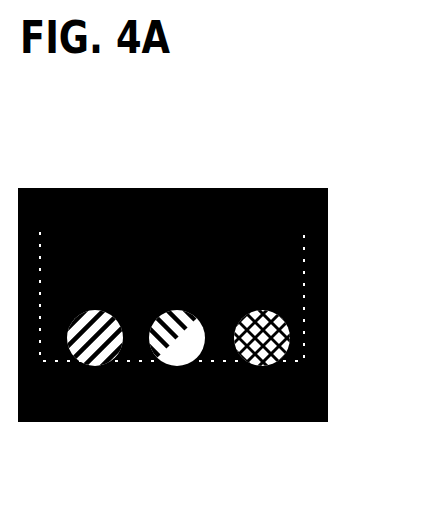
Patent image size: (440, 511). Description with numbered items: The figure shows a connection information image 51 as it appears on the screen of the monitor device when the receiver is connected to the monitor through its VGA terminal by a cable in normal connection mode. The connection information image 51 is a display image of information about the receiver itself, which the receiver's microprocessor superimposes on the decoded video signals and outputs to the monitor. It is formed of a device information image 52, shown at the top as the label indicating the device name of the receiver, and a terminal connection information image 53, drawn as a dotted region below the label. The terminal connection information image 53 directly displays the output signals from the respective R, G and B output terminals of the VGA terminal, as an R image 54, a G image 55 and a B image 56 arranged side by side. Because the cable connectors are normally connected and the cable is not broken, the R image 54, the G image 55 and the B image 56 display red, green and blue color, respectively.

The connection information image 51 is at (183, 168).
The device information image 52 is at (209, 188).
The terminal connection information image 53 is at (333, 297).
The R image 54 is at (103, 422).
The G image 55 is at (188, 422).
The B image 56 is at (272, 422).